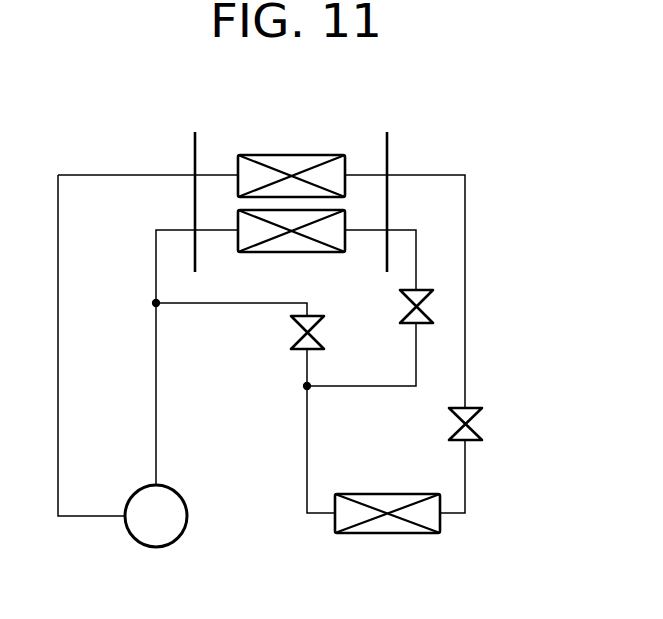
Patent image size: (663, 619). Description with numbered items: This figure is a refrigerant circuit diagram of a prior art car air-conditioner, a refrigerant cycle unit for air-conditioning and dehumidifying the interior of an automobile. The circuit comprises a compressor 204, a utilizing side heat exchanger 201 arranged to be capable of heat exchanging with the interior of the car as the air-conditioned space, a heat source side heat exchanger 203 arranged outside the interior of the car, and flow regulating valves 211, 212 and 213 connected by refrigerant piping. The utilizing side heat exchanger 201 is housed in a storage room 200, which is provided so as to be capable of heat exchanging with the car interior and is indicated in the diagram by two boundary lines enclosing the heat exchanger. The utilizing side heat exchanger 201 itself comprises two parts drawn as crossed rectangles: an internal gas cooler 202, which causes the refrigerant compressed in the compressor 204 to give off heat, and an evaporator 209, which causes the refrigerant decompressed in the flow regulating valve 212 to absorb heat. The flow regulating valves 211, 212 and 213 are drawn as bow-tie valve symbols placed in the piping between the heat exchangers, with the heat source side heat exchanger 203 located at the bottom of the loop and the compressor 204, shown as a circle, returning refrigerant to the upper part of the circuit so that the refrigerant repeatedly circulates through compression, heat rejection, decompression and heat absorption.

The utilizing side heat exchanger 201 is at (366, 134).
The storage room 200 is at (372, 206).
The internal gas cooler 202 is at (276, 155).
The evaporator 209 is at (238, 222).
The flow regulating valve 212 is at (420, 290).
The flow regulating valve 213 is at (299, 350).
The flow regulating valve 211 is at (473, 410).
The heat source side heat exchanger 203 is at (360, 536).
The compressor 204 is at (187, 512).